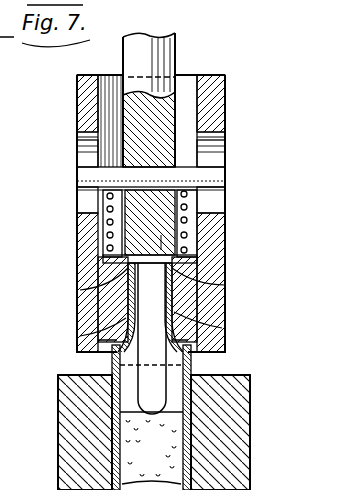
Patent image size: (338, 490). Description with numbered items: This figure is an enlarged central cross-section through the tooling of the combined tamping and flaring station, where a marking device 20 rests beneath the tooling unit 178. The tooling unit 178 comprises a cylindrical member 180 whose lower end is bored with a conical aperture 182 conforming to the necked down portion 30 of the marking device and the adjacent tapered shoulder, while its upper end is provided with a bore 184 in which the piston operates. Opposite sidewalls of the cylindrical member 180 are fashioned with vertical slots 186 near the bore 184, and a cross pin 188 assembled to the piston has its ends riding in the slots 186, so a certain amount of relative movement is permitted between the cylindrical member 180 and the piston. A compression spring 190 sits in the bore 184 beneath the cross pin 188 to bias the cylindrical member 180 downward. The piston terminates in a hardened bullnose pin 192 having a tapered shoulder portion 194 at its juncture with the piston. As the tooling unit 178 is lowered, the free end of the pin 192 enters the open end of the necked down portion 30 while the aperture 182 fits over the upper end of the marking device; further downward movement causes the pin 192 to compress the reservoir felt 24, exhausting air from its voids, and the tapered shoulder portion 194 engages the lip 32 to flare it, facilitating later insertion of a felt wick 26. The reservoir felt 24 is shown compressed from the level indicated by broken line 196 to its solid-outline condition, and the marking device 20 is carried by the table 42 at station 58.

The felt wick 26 is at (173, 57).
The tooling unit 178 is at (236, 137).
The bore 184 is at (100, 97).
The vertical slots 186 is at (84, 156).
The cross pin 188 is at (89, 176).
The cylindrical member 180 is at (227, 233).
The conical aperture 182 is at (226, 302).
The compression spring 190 is at (110, 230).
The tapered shoulder portion 194 is at (110, 279).
The bullnose pin 192 is at (110, 337).
The necked down portion 30 is at (188, 318).
The lip 32 is at (193, 296).
The marking device 20 is at (106, 410).
The broken line 196 is at (215, 376).
The die assembly 58 is at (258, 386).
The reservoir felt 24 is at (151, 448).
The table 42 is at (29, 479).